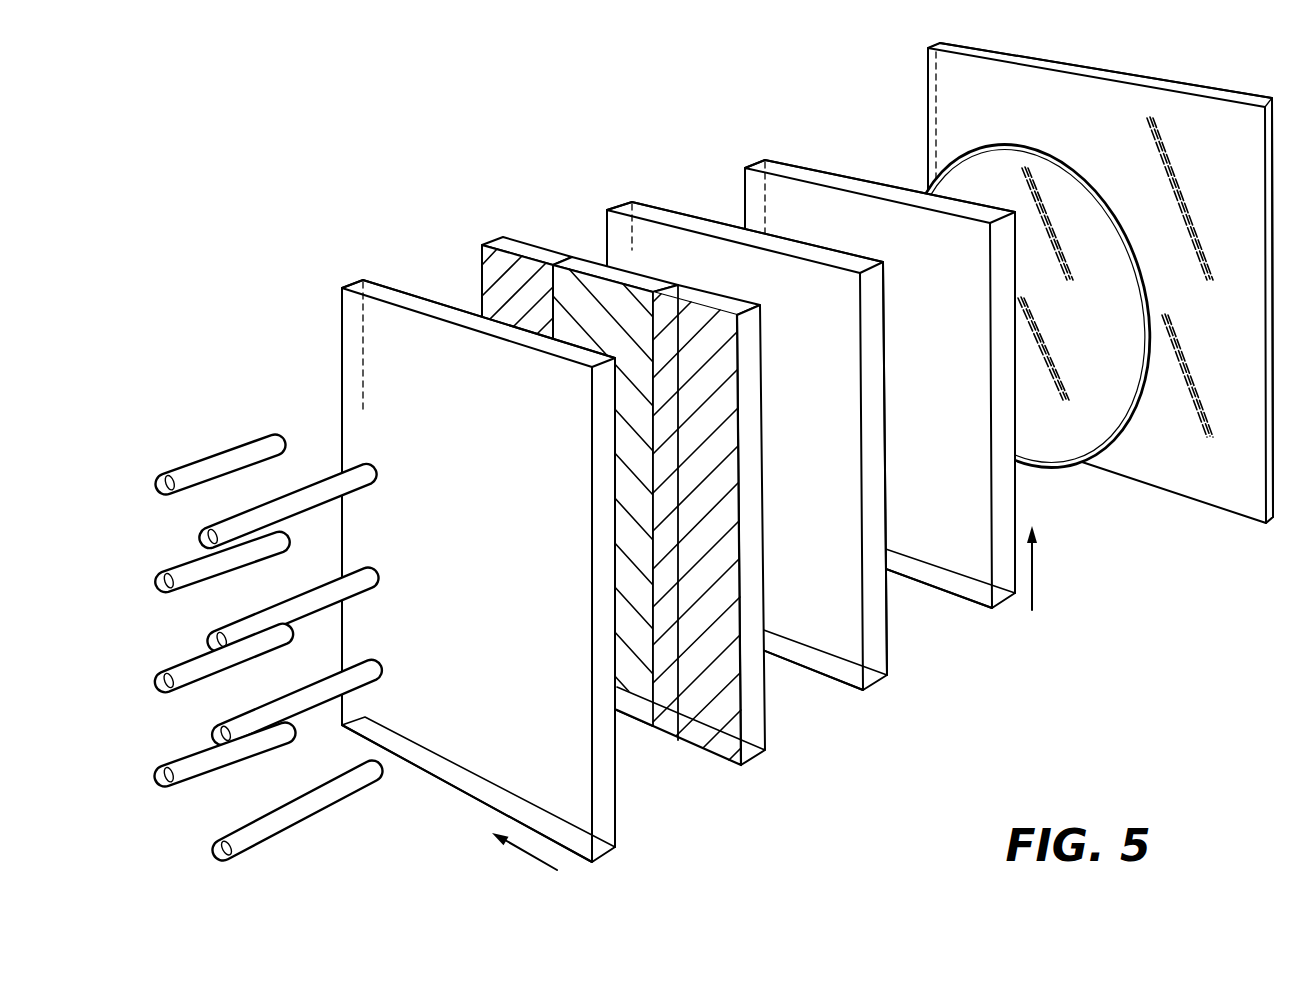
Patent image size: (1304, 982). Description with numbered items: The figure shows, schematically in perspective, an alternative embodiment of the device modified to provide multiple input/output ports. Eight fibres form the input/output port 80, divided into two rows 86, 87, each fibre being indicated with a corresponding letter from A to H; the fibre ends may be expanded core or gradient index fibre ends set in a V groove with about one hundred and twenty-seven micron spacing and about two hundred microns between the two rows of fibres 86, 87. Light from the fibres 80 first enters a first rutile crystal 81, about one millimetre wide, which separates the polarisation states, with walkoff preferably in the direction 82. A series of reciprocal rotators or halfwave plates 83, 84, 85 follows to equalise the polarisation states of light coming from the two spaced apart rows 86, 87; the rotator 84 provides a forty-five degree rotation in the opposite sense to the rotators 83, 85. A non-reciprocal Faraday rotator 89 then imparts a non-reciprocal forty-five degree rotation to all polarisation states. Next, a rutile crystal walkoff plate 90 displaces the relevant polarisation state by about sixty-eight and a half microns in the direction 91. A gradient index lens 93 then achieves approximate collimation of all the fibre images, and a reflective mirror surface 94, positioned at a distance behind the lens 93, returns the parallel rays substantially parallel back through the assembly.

The input/output port 80 is at (281, 564).
The first rutile crystal 81 is at (607, 820).
The walkoff direction 82 is at (529, 870).
The reciprocal rotator 83 is at (713, 438).
The reciprocal rotator 84 is at (597, 305).
The reciprocal rotator 85 is at (497, 275).
The row of fibres 86 is at (357, 450).
The row of fibres 87 is at (253, 428).
The non-reciprocal Faraday rotator 89 is at (848, 668).
The rutile crystal walkoff plate 90 is at (980, 590).
The displacement direction 91 is at (1049, 571).
The gradient index lens 93 is at (1090, 433).
The reflective mirror surface 94 is at (1247, 493).